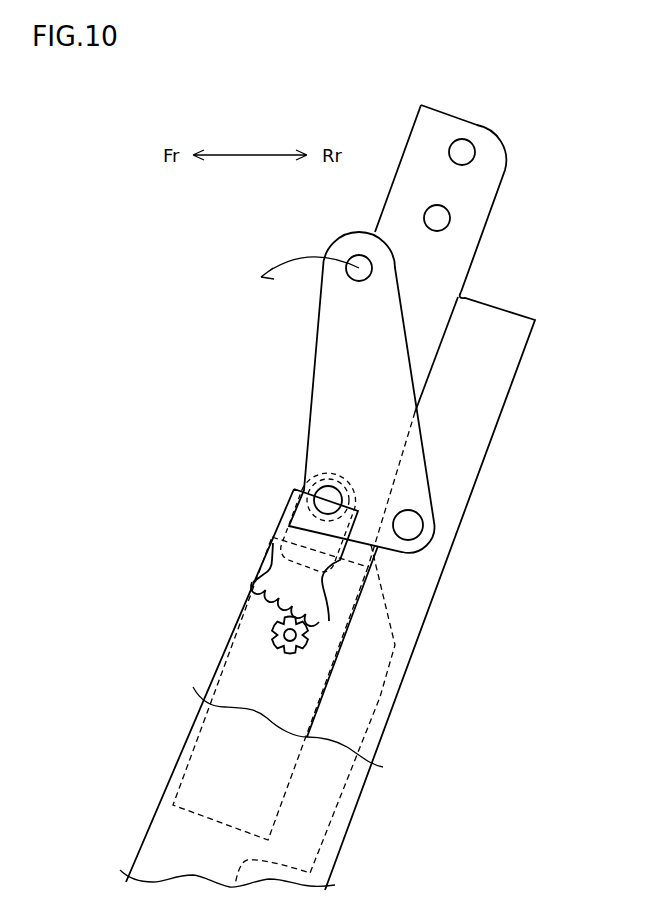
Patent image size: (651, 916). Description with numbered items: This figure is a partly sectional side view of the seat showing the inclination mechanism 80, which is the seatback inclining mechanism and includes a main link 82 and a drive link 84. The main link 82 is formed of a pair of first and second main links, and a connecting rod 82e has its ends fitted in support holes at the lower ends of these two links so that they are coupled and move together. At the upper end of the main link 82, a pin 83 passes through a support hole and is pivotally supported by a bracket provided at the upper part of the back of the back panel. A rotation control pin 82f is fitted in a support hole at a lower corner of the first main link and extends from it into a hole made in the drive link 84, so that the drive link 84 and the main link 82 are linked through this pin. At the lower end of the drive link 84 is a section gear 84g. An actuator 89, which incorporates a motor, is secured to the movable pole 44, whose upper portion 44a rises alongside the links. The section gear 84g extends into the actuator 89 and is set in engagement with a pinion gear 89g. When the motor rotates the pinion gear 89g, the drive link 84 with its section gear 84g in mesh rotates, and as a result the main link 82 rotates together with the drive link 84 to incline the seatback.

The inclination mechanism 80 is at (187, 402).
The main link 82 is at (330, 340).
The connecting rod 82e is at (420, 526).
The rotation control pin 82f is at (308, 478).
The pin 83 is at (356, 264).
The drive link 84 is at (288, 504).
The section gear 84g is at (250, 596).
The actuator 89 is at (232, 673).
The pinion gear 89g is at (258, 634).
The movable pole 44 is at (412, 609).
The bracket portion 44a is at (481, 431).